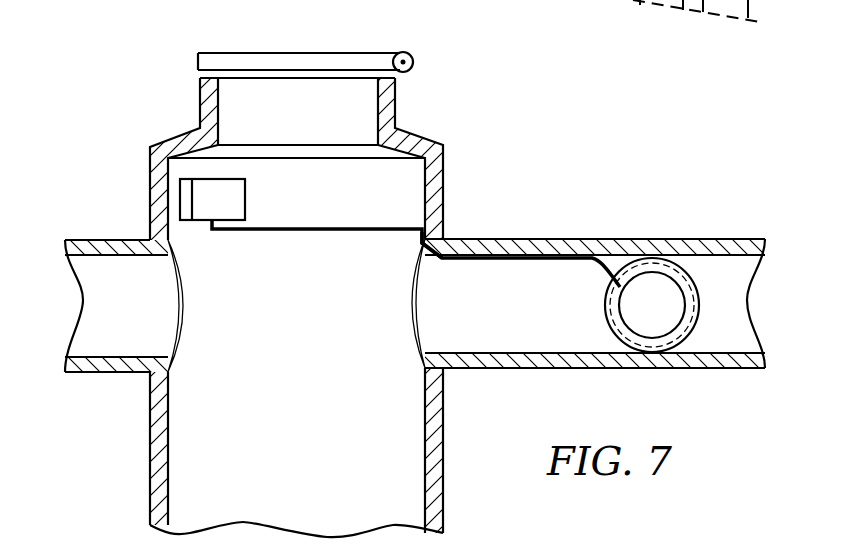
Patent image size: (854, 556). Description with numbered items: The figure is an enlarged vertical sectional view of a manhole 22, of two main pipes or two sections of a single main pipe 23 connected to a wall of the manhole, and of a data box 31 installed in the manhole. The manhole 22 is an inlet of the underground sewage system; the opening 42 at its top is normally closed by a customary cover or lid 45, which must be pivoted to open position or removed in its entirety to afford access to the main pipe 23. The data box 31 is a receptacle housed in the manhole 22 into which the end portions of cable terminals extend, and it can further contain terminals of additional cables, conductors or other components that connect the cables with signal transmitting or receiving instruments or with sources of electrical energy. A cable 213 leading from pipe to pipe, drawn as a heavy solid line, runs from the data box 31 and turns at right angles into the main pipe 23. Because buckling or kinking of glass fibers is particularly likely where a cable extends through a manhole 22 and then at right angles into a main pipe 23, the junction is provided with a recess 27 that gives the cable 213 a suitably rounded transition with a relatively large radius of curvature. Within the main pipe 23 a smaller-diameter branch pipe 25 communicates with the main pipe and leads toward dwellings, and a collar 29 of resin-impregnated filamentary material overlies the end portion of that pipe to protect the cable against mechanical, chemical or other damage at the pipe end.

The manhole 22 is at (416, 105).
The main pipe 23 is at (105, 263).
The branch pipe 25 is at (652, 295).
The recess 27 is at (420, 262).
The collar 29 is at (603, 325).
The data box 31 is at (232, 211).
The opening 42 is at (263, 108).
The cover 45 is at (320, 63).
The cable 213 is at (523, 263).